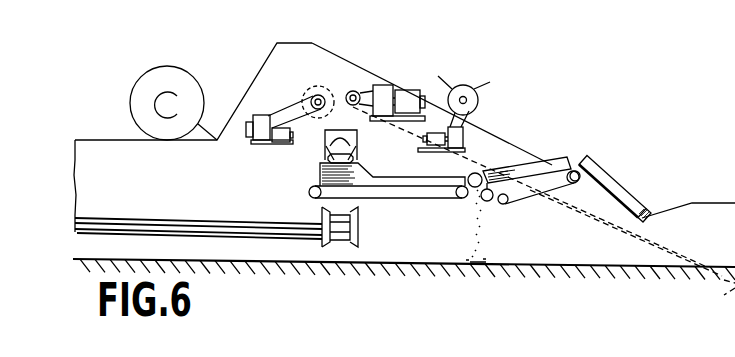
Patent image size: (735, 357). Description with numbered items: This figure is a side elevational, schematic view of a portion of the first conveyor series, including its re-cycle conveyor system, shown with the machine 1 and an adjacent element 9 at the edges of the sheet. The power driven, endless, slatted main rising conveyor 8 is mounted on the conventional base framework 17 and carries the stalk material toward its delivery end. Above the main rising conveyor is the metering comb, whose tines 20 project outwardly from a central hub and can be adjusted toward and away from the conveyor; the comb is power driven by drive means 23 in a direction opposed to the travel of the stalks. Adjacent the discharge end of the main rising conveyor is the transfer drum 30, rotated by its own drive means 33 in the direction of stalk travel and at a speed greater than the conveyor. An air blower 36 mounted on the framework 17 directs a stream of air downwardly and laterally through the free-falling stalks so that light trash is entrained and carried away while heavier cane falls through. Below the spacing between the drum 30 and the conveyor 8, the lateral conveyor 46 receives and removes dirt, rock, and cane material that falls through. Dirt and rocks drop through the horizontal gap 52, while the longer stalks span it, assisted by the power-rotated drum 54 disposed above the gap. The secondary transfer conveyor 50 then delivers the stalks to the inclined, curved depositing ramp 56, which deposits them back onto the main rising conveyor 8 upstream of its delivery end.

The machine body 1 is at (58, 195).
The main rising conveyor 8 is at (652, 246).
The guide 9 is at (413, 353).
The base framework 17 is at (508, 152).
The tines 20 is at (490, 82).
The drive means 23 is at (463, 138).
The transfer drum 30 is at (330, 88).
The drive means 33 is at (283, 142).
The air blower 36 is at (203, 84).
The lateral conveyor 46 is at (328, 139).
The secondary transfer conveyor 50 is at (555, 162).
The horizontal gap 52 is at (460, 206).
The power-rotated drum 54 is at (465, 172).
The depositing ramp 56 is at (646, 203).